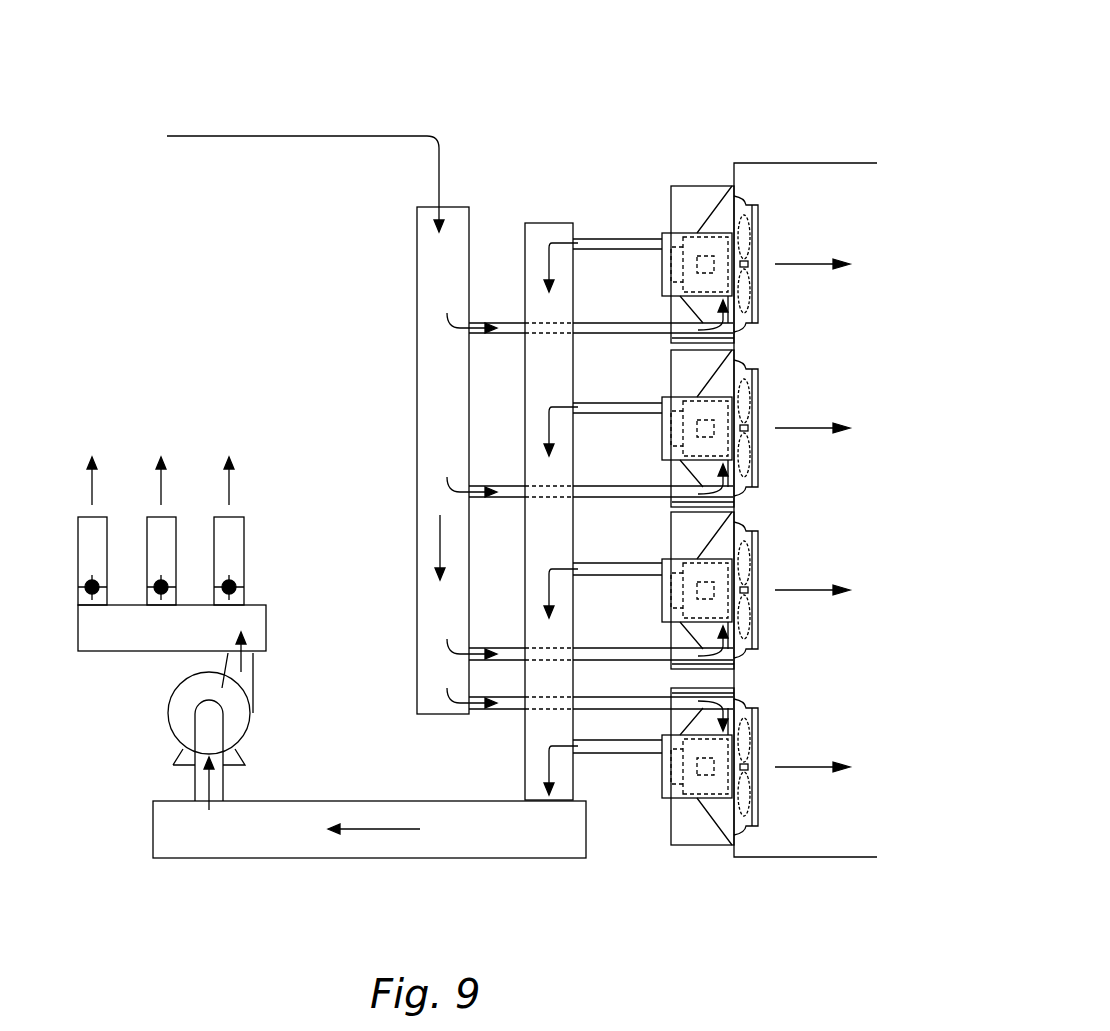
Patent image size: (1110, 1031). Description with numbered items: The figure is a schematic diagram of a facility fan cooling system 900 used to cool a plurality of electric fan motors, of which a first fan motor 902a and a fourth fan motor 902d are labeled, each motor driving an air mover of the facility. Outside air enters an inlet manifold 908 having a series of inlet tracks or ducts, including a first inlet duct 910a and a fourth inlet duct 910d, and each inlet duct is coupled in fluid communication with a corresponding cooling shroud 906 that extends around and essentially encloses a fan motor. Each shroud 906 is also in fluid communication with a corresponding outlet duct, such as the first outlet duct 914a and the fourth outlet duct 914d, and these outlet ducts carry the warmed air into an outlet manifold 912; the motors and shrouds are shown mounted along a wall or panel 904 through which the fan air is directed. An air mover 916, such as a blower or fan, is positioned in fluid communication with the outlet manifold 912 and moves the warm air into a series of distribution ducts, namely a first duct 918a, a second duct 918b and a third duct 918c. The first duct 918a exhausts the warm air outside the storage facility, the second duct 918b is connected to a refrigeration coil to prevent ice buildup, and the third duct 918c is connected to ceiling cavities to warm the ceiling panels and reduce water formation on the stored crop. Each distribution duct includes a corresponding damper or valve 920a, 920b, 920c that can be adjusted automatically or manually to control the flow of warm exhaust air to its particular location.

The facility fan cooling system 900 is at (697, 54).
The enclosure wall 904 is at (813, 225).
The fan motor 902a is at (710, 790).
The fan motor 902d is at (671, 207).
The cooling shroud 906 is at (660, 790).
The inlet manifold 908 is at (417, 656).
The inlet duct 910a is at (500, 712).
The inlet duct 910d is at (497, 322).
The outlet manifold 912 is at (577, 532).
The outlet duct 914a is at (612, 752).
The outlet duct 914d is at (612, 238).
The air mover 916 is at (172, 714).
The first distribution duct 918a is at (78, 540).
The second distribution duct 918b is at (176, 528).
The third distribution duct 918c is at (244, 550).
The damper or valve 920a is at (88, 594).
The damper or valve 920b is at (163, 583).
The damper or valve 920c is at (233, 590).